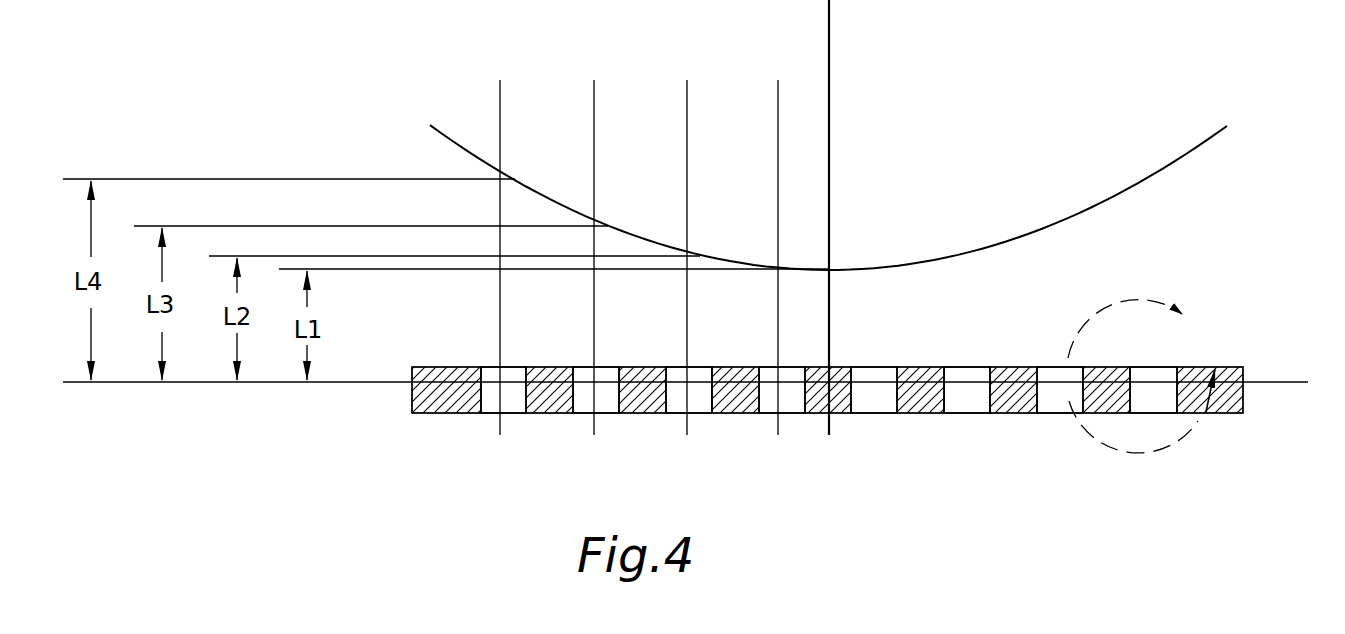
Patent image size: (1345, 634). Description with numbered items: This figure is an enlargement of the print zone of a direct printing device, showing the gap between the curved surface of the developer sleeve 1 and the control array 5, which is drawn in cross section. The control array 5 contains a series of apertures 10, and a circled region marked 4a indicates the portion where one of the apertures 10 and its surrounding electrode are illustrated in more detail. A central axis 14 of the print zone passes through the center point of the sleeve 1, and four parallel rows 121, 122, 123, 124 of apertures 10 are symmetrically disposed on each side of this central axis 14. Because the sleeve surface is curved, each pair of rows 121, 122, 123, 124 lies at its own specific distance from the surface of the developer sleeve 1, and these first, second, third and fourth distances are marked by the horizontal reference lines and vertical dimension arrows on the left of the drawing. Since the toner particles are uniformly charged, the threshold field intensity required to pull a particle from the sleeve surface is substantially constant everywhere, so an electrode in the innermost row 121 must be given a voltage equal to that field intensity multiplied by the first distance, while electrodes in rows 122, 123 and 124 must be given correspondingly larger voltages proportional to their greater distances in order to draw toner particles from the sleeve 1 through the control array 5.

The developer sleeve 1 is at (452, 130).
The central axis 14 is at (822, 37).
The apertures 10 is at (827, 390).
The first row of apertures 121 is at (770, 414).
The second row of apertures 122 is at (679, 414).
The third row of apertures 123 is at (585, 414).
The fourth row of apertures 124 is at (493, 414).
The control array 5 is at (1237, 391).
The detail view indicator 4a is at (1141, 376).